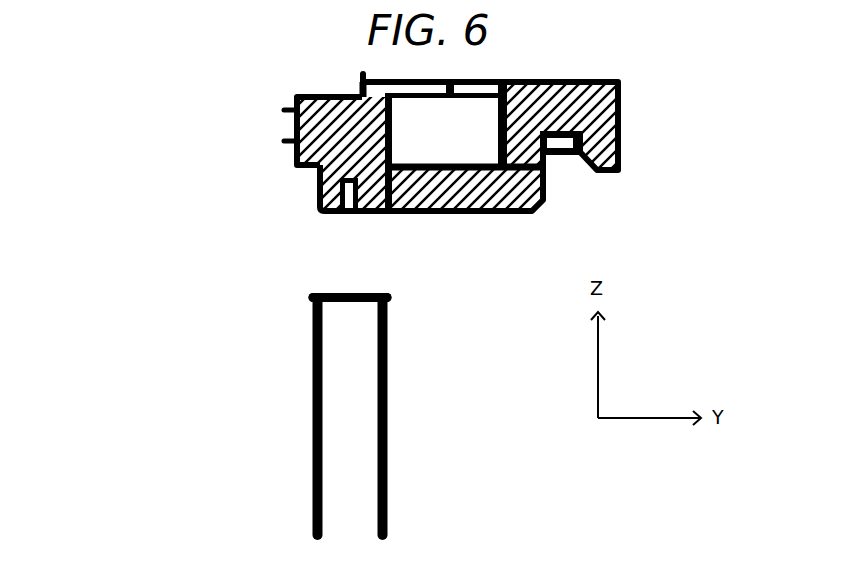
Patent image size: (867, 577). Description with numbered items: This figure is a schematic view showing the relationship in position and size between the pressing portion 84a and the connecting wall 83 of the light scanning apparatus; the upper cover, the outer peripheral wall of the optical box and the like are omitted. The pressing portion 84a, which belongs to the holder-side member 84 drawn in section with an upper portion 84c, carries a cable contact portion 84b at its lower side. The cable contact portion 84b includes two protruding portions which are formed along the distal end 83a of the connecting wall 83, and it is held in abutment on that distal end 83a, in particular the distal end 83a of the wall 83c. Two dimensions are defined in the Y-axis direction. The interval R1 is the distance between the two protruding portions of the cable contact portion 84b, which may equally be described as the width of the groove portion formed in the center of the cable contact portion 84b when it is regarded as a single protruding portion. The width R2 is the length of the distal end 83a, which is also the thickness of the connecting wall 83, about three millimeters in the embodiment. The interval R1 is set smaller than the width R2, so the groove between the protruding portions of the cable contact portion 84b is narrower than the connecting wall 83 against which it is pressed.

The holder 84 is at (374, 148).
The pressing portion 84a is at (236, 152).
The cable contact portion 84b is at (318, 190).
The upper portion of holder body 84c is at (290, 125).
The connecting wall 83 is at (372, 408).
The wall 83c is at (350, 417).
The distal end 83a is at (315, 300).
The interval R1 is at (338, 225).
The width R2 is at (321, 283).